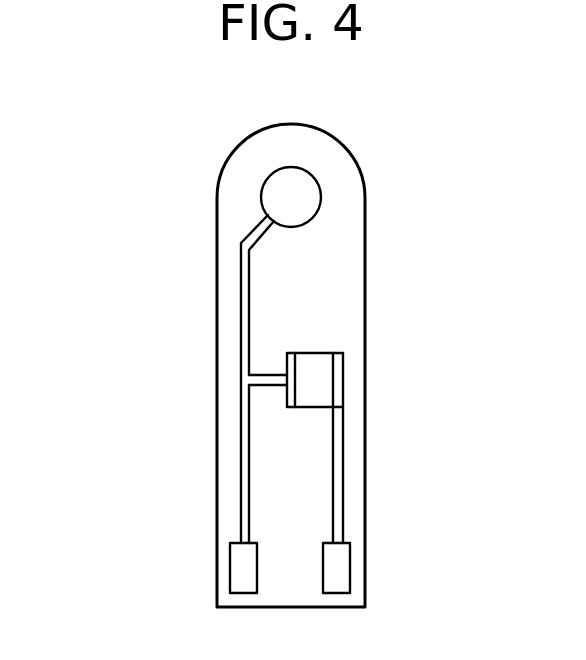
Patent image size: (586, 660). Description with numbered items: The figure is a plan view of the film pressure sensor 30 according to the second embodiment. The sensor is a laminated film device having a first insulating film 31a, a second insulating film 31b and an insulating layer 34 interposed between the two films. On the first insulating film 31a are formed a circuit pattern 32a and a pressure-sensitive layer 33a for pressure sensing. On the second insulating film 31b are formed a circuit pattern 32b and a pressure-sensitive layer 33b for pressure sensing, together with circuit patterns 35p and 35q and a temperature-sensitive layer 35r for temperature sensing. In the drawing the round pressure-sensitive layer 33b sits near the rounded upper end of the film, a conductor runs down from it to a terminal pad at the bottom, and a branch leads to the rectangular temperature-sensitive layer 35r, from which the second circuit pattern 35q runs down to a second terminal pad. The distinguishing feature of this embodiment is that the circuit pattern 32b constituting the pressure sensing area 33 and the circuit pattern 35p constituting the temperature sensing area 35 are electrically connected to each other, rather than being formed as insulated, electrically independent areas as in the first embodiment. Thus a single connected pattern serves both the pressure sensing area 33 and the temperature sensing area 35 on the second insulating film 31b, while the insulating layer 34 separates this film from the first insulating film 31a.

The film pressure sensor 30 is at (405, 238).
The first insulating film 31a is at (423, 553).
The second insulating film 31b is at (352, 513).
The circuit pattern 32a is at (145, 513).
The circuit pattern 32b is at (240, 469).
The pressure sensing area 33 is at (228, 288).
The pressure-sensitive layer 33a is at (191, 192).
The pressure-sensitive layer 33b is at (274, 192).
The insulating layer 34 is at (343, 318).
The temperature sensing area 35 is at (343, 390).
The circuit pattern 35p is at (272, 364).
The circuit pattern 35q is at (343, 462).
The temperature-sensitive layer 35r is at (317, 370).